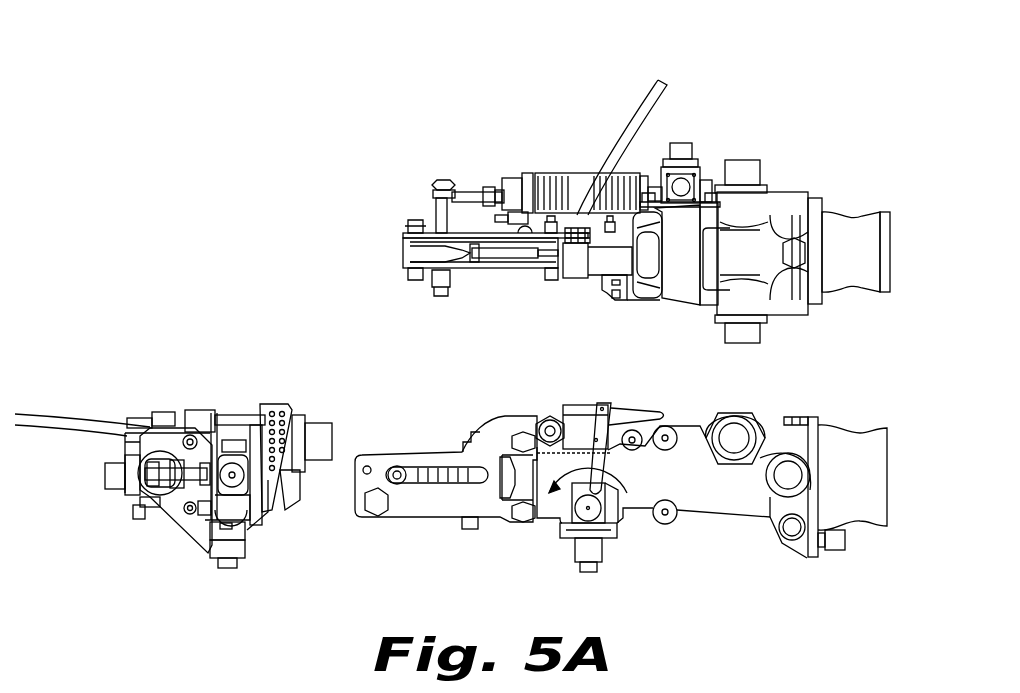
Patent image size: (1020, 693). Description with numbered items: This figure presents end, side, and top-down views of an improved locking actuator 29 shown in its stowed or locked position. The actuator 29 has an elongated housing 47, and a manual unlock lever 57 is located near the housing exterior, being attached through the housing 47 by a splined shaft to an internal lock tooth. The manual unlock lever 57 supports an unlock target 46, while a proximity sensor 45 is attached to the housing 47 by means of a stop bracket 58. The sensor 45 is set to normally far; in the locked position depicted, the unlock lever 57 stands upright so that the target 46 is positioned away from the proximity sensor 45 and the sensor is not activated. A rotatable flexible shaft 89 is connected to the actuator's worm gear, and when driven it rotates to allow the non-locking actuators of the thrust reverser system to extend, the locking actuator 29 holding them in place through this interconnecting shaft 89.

The locking actuator 29 is at (262, 82).
The proximity sensor 45 is at (570, 280).
The unlock target 46 is at (592, 282).
The elongated housing 47 is at (725, 493).
The manual unlock lever 57 is at (617, 305).
The stop bracket 58 is at (470, 232).
The rotatable flexible shaft 89 is at (688, 125).